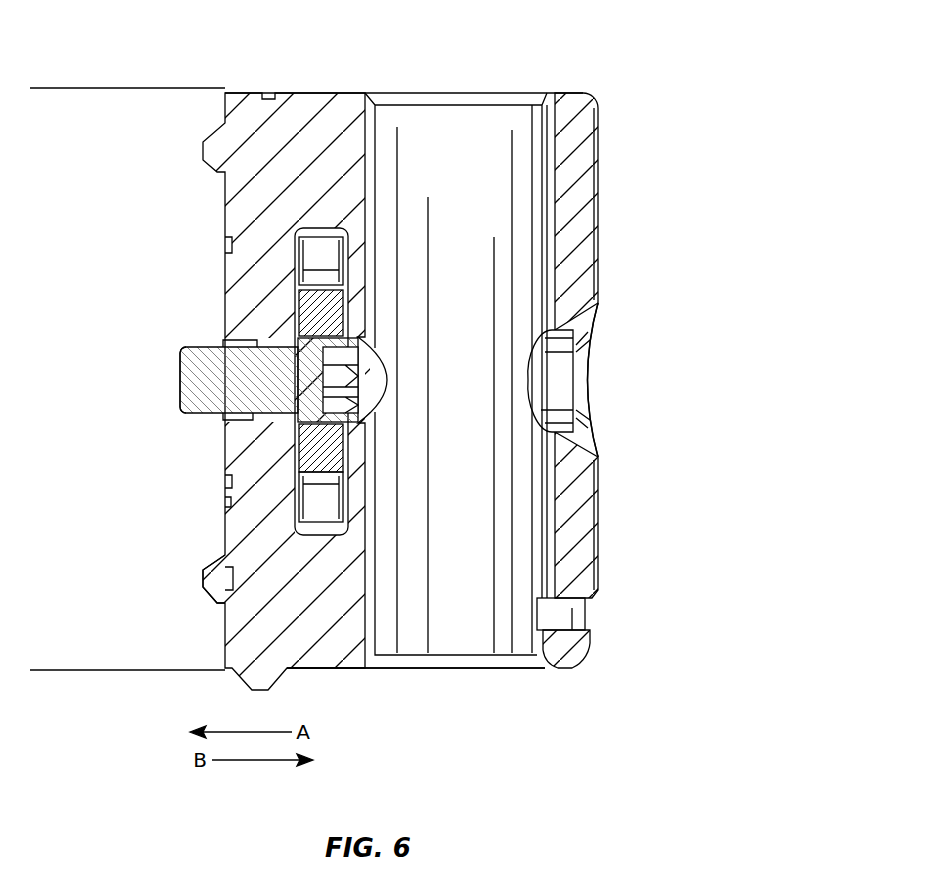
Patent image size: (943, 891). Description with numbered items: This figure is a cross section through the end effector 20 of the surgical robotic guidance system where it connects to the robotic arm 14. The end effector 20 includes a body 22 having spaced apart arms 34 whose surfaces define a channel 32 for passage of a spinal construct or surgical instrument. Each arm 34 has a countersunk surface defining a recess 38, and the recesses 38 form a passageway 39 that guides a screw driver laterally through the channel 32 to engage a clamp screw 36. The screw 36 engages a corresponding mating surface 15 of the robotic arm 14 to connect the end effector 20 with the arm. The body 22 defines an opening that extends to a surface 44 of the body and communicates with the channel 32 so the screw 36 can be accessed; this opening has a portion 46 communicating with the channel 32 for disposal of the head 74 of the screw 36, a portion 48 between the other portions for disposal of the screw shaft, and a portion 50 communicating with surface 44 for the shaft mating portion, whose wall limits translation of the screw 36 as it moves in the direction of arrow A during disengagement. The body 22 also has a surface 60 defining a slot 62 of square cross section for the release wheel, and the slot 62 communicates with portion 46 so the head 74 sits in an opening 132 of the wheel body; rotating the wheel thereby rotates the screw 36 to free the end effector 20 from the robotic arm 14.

The robotic arm 14 is at (175, 112).
The end effector 20 is at (693, 179).
The body 22 is at (316, 130).
The channel 32 is at (505, 285).
The arms 34 is at (578, 138).
The clamp screw 36 is at (253, 375).
The recess 38 is at (567, 372).
The passageway 39 is at (596, 387).
The surface 44 is at (223, 465).
The portion 46 is at (343, 332).
The portion 48 is at (228, 343).
The portion 50 is at (223, 420).
The mating surface 15 is at (182, 410).
The surface 60 is at (299, 258).
The slot 62 is at (303, 229).
The head 74 is at (312, 358).
The opening 132 is at (227, 505).